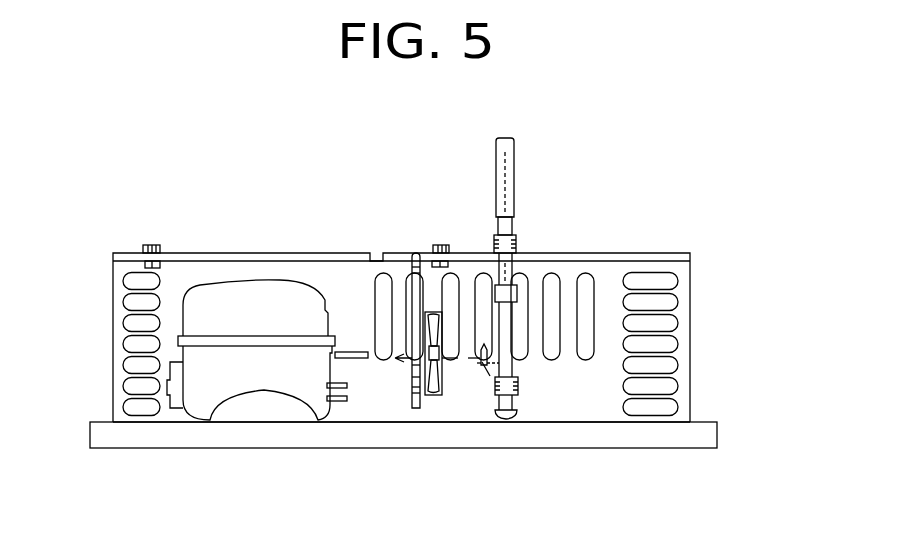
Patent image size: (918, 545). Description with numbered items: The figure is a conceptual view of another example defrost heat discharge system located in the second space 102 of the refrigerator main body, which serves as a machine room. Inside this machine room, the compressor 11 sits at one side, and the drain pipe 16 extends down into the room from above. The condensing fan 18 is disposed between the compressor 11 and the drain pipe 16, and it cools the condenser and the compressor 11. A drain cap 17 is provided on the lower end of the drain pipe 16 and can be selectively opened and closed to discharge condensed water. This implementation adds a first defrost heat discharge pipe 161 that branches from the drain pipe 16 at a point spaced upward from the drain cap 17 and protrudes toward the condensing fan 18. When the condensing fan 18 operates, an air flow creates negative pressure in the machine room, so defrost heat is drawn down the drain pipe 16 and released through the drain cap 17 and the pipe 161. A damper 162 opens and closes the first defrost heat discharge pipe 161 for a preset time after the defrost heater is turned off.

The compressor 11 is at (263, 300).
The drain pipe 16 is at (515, 155).
The drain cap 17 is at (506, 420).
The condensing fan 18 is at (434, 296).
The second space 102 is at (604, 306).
The first defrost heat discharge pipe 161 is at (484, 370).
The damper 162 is at (483, 366).